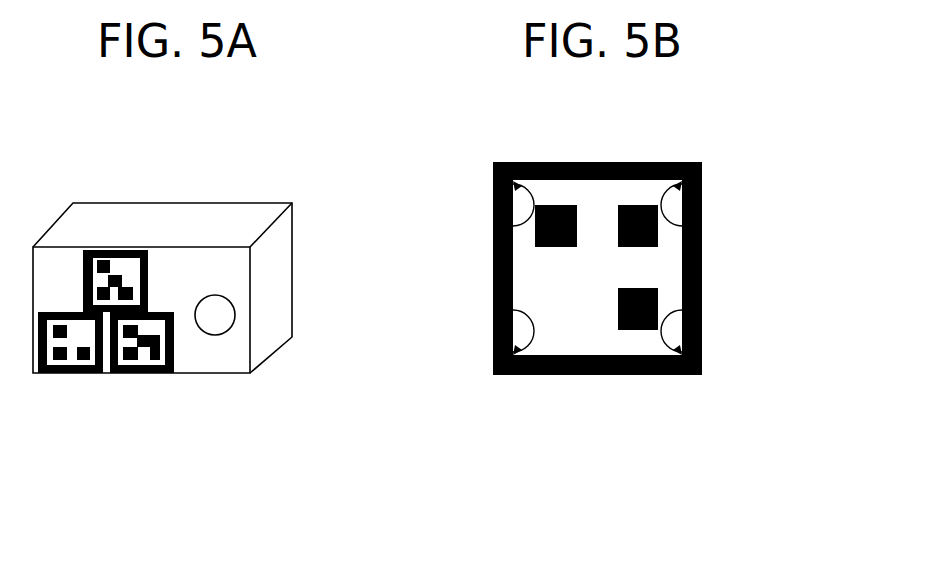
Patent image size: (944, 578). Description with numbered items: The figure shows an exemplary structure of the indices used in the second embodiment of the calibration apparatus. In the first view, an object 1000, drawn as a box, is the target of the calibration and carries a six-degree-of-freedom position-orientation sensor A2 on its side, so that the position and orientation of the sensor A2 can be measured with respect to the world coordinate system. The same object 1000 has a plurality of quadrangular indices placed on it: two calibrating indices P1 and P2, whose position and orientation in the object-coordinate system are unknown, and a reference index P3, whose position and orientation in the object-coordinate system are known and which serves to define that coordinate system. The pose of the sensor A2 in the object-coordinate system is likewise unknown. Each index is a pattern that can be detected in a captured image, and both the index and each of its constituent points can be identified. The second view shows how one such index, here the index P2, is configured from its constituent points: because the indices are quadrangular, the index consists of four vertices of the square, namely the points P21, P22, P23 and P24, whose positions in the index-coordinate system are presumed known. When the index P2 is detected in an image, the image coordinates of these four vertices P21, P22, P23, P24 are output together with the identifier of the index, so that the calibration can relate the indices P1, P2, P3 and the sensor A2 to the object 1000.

In FIG. 5A, the object 1000 is at (235, 217).
In FIG. 5A, the six-degree-of-freedom position-orientation sensor A2 is at (212, 336).
In FIG. 5A, the calibrating index P1 is at (153, 373).
In FIG. 5A, the calibrating index P2 is at (57, 373).
In FIG. 5B, the calibrating index P2 is at (600, 375).
In FIG. 5A, the reference index P3 is at (117, 250).
In FIG. 5B, the point constituting index P21 is at (493, 312).
In FIG. 5B, the point constituting index P22 is at (702, 312).
In FIG. 5B, the point constituting index P23 is at (702, 225).
In FIG. 5B, the point constituting index P24 is at (493, 225).